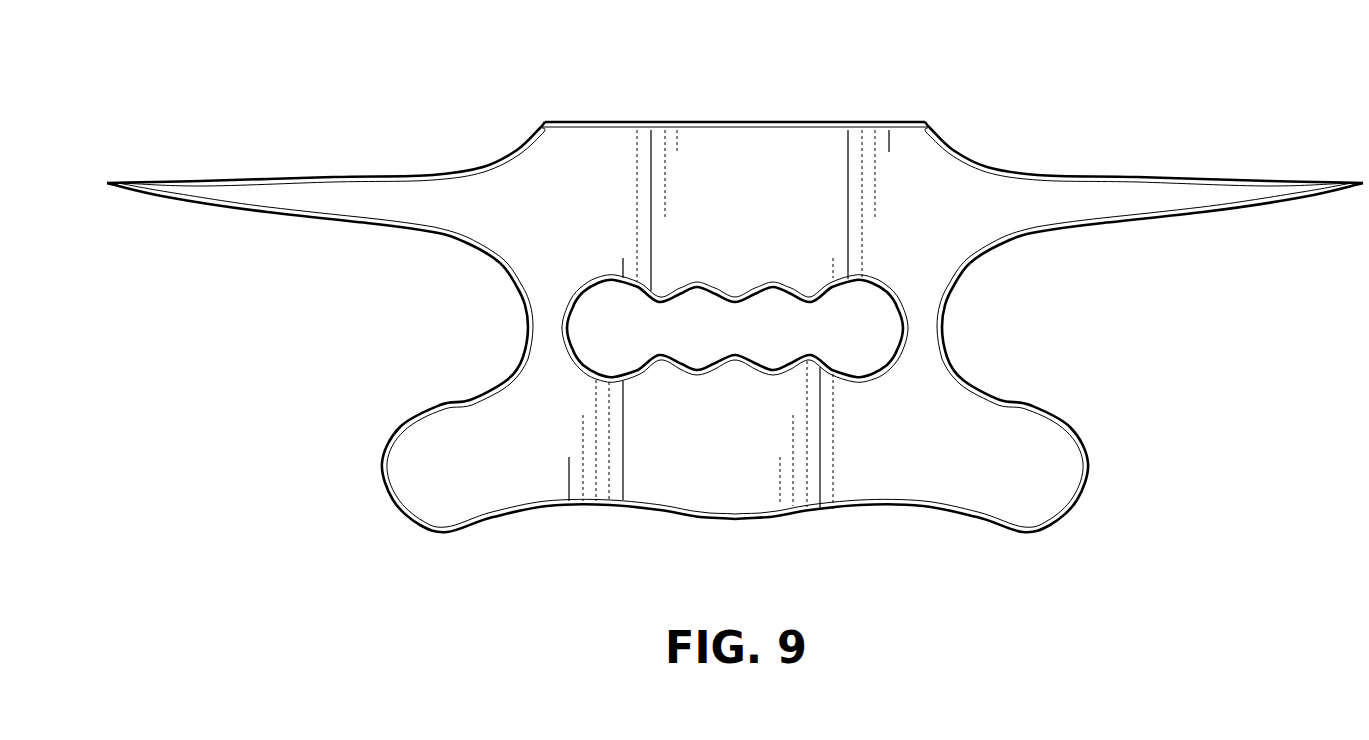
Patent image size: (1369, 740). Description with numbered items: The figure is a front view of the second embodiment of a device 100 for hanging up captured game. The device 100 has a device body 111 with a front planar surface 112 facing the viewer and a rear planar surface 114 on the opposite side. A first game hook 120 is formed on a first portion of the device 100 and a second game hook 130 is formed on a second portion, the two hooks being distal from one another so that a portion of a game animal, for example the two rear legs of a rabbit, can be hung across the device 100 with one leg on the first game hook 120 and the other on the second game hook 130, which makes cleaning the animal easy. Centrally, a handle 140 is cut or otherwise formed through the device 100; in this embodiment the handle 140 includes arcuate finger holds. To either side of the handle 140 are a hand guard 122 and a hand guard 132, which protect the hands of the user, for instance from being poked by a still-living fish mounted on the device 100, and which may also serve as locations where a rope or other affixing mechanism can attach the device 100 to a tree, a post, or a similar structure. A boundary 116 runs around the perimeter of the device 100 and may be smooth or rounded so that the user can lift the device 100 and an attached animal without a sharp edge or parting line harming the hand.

The device 100 is at (700, 122).
The device body 111 is at (835, 158).
The front planar surface 112 is at (497, 482).
The rear planar surface 114 is at (607, 512).
The boundary 116 is at (368, 170).
The first game hook 120 is at (1278, 203).
The hand guard 122 is at (1037, 480).
The second game hook 130 is at (213, 203).
The hand guard 132 is at (423, 466).
The handle 140 is at (805, 366).